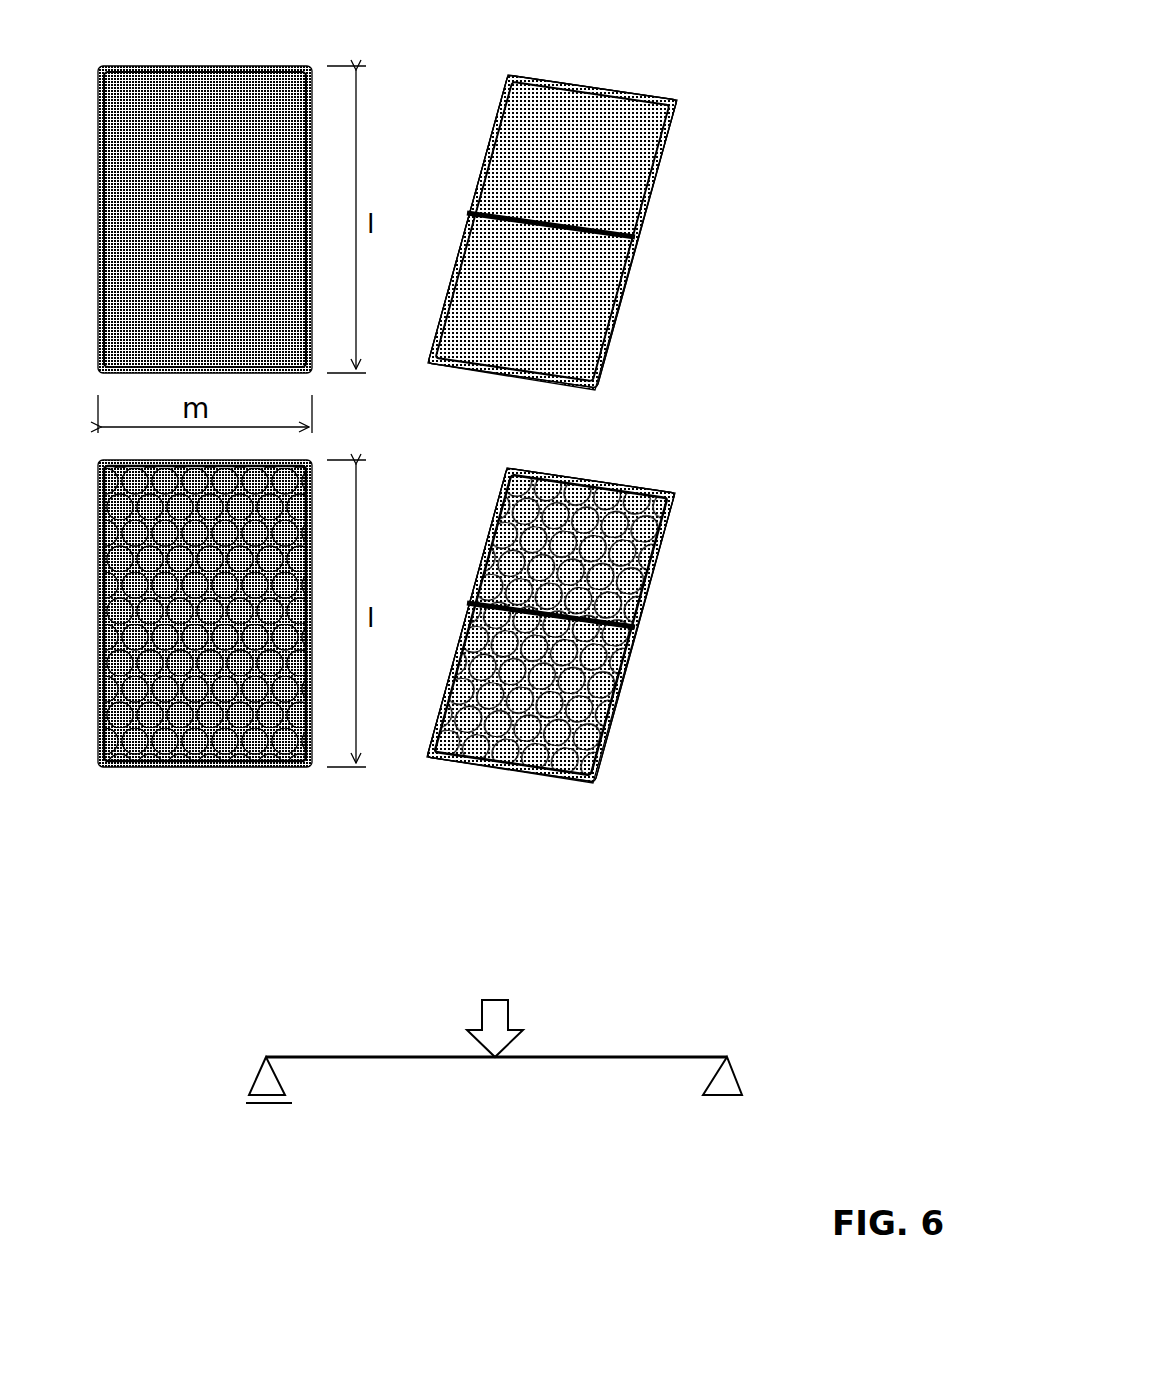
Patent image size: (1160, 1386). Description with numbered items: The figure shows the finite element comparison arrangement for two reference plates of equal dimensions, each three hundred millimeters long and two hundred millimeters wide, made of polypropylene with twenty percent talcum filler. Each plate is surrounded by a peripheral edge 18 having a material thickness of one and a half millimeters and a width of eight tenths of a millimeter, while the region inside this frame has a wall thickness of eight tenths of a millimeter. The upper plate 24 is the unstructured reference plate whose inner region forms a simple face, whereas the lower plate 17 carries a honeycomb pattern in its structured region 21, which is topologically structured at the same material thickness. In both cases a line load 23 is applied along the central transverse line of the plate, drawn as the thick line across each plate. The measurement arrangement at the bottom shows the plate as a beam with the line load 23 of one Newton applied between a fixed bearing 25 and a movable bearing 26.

The honeycomb panel 17 is at (237, 787).
The peripheral edge 18 is at (684, 428).
The structured region 21 is at (697, 625).
The line load 23 is at (498, 1037).
The plain panel layer 24 is at (718, 232).
The fixed bearing 25 is at (724, 1098).
The movable bearing 26 is at (269, 1097).